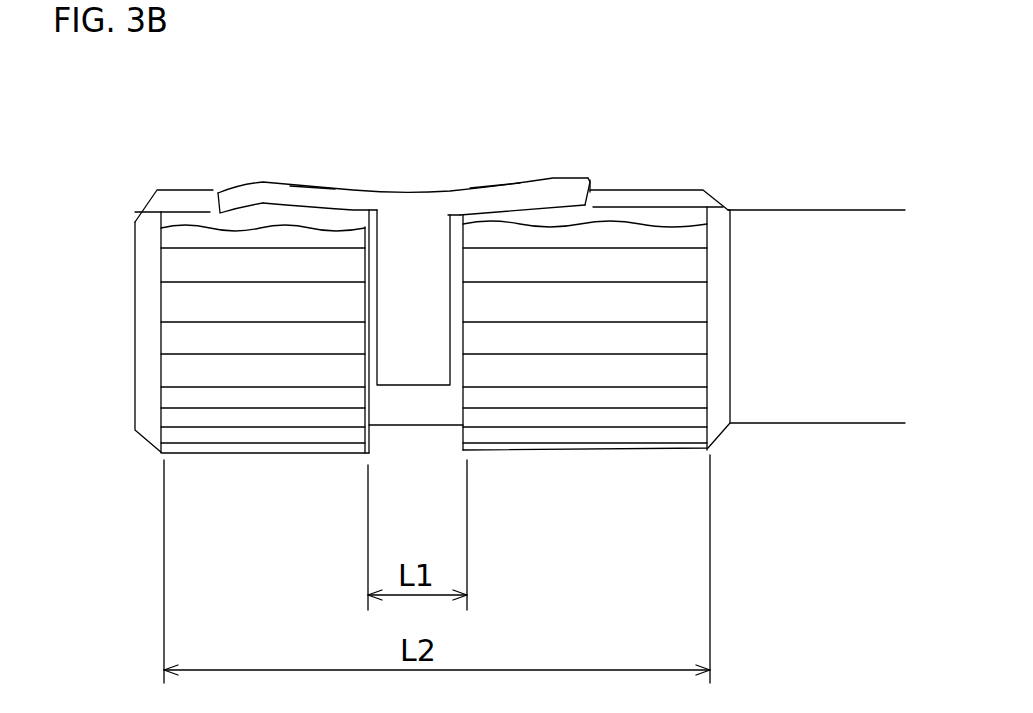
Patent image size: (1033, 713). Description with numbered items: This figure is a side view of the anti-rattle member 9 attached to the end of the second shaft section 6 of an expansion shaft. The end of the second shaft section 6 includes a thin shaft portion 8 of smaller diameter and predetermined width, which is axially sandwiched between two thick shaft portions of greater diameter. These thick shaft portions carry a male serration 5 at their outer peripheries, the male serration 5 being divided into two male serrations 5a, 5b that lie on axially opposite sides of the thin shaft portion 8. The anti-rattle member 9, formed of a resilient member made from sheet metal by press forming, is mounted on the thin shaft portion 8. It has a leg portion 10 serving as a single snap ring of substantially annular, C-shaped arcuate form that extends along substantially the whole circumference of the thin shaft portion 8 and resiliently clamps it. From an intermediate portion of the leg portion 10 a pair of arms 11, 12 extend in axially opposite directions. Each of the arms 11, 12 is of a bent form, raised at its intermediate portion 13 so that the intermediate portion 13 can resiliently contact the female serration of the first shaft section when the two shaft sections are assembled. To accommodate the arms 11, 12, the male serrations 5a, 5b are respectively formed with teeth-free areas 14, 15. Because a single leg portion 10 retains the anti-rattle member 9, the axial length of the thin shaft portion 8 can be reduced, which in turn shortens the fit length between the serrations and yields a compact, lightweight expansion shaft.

The male serration 5 is at (668, 455).
The male serration 5a is at (268, 452).
The male serration 5b is at (578, 452).
The second shaft section 6 is at (823, 210).
The thin shaft portion 8 is at (420, 410).
The anti-rattle member 9 is at (353, 190).
The leg portion 10 is at (403, 238).
The arm 11 is at (312, 183).
The arm 12 is at (495, 183).
The intermediate portion 13 is at (252, 180).
The teeth-free area 14 is at (207, 218).
The teeth-free area 15 is at (633, 215).